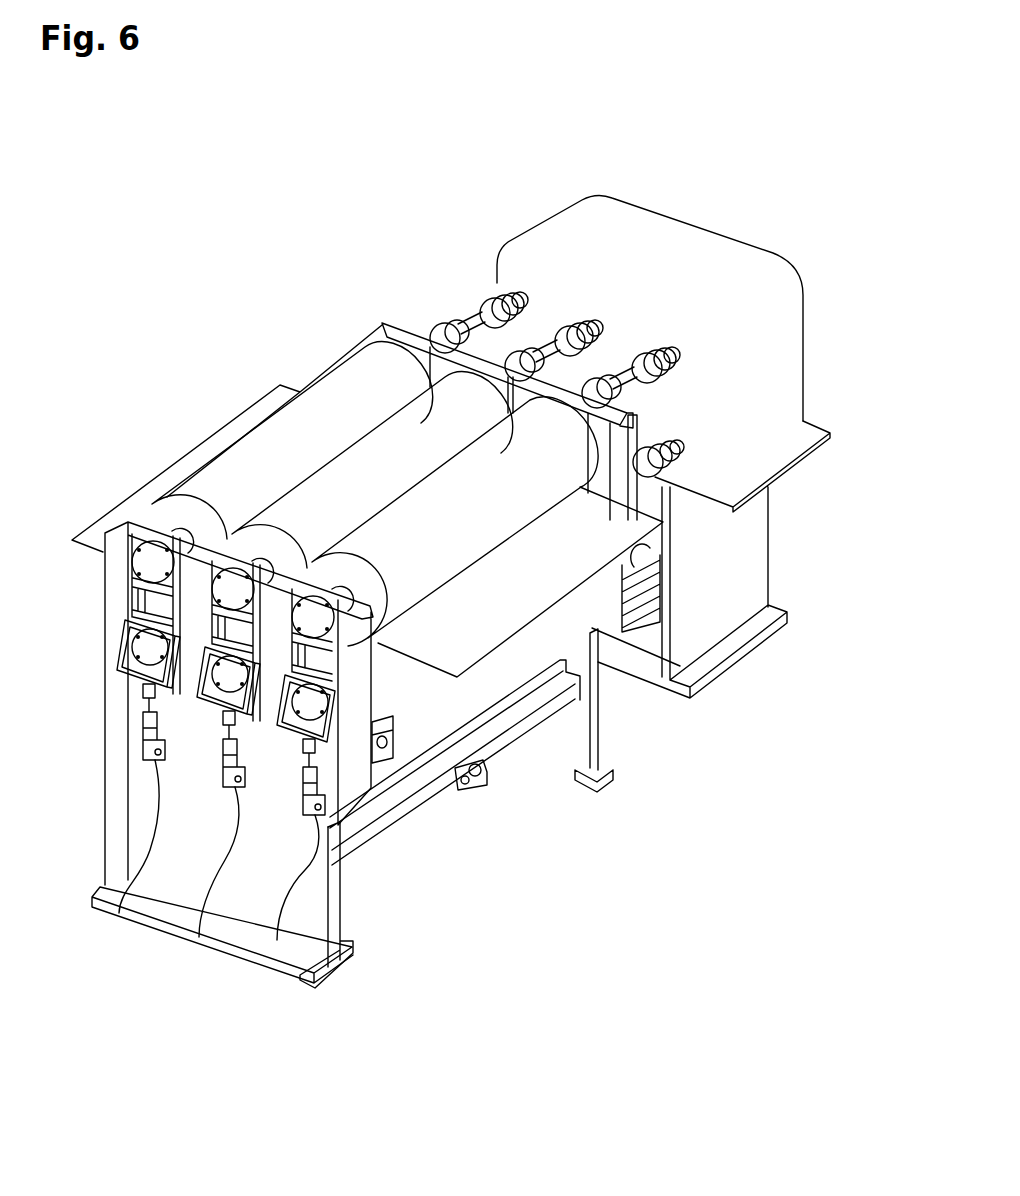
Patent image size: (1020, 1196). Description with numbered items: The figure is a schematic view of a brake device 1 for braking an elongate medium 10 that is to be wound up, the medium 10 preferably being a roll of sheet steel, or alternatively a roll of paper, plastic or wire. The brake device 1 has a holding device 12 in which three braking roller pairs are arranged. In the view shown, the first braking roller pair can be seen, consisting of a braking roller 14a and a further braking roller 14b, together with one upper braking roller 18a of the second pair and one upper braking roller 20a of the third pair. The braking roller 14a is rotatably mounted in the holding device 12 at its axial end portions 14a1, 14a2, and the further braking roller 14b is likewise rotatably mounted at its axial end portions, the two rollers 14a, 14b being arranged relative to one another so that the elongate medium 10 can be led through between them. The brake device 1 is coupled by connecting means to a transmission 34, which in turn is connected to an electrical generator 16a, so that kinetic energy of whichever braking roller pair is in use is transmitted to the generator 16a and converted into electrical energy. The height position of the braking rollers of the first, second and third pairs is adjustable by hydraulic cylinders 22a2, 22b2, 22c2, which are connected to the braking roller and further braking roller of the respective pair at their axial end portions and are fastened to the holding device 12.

The brake device 1 is at (153, 296).
The elongate medium 10 is at (453, 533).
The holding device 12 is at (340, 923).
The braking roller 14a is at (450, 647).
The further braking roller 14b is at (397, 673).
The axial end portion 14a1 is at (590, 418).
The axial end portion 14a2 is at (200, 483).
The electrical generator 16a is at (613, 627).
The upper braking roller 18a is at (393, 437).
The upper braking roller 20a is at (327, 400).
The hydraulic cylinder 22a2 is at (277, 940).
The hydraulic cylinder 22b2 is at (199, 937).
The hydraulic cylinder 22c2 is at (119, 913).
The transmission 34 is at (720, 260).